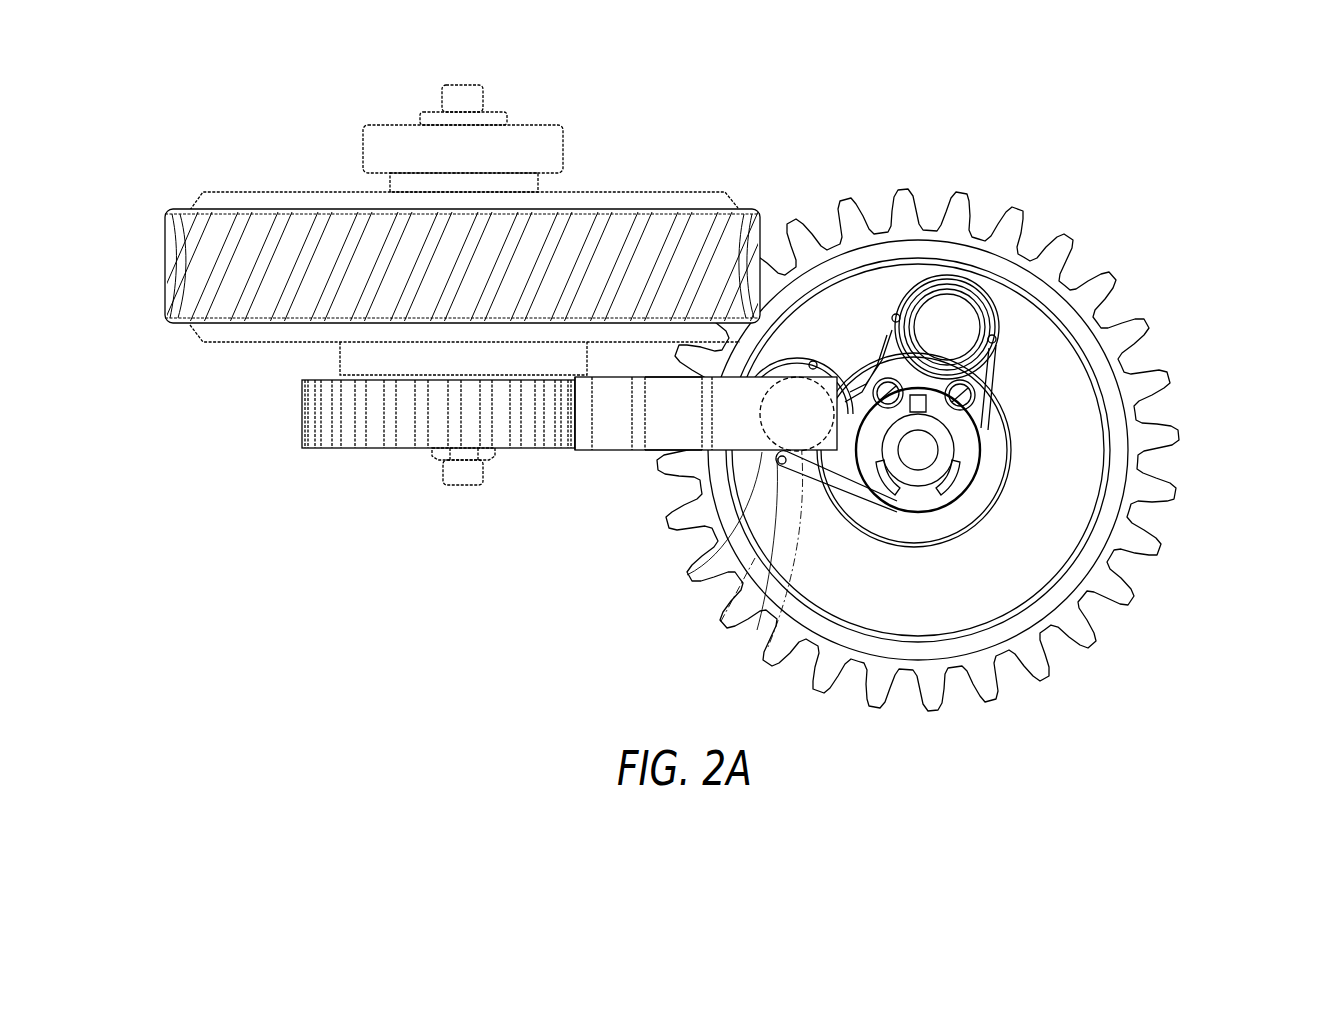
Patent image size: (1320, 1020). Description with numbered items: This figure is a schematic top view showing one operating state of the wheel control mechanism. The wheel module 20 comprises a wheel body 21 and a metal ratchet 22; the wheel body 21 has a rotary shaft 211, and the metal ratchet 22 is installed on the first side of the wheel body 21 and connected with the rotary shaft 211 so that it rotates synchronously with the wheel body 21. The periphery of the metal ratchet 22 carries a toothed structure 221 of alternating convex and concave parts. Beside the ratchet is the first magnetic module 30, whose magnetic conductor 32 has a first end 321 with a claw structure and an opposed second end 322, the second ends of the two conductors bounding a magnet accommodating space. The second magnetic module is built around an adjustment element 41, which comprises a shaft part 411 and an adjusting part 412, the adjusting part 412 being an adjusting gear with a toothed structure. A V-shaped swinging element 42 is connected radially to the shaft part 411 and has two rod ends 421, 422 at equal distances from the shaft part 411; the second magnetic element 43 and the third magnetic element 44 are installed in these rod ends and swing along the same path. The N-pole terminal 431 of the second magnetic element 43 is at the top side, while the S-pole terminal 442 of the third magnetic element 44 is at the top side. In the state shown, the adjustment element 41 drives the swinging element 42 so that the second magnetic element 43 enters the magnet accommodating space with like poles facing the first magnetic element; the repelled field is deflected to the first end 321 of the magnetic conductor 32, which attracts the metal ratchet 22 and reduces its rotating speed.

The wheel module 20 is at (216, 205).
The wheel body 21 is at (633, 240).
The metal ratchet 22 is at (392, 450).
The toothed structure 221 is at (303, 415).
The rotary shaft 211 is at (462, 483).
The first magnetic module 30 is at (674, 503).
The first end 321 is at (590, 432).
The magnetic conductor 32 is at (670, 455).
The second end 322 is at (690, 573).
The second magnetic element 43 is at (796, 398).
The N-pole terminal 431 is at (768, 647).
The swinging element 42 is at (866, 365).
The rod end 422 is at (987, 303).
The third magnetic element 44 is at (1003, 264).
The S-pole terminal 442 is at (930, 325).
The adjustment element 41 is at (946, 450).
The shaft part 411 is at (925, 450).
The adjusting part 412 is at (1053, 542).
The rod end 421 is at (723, 621).